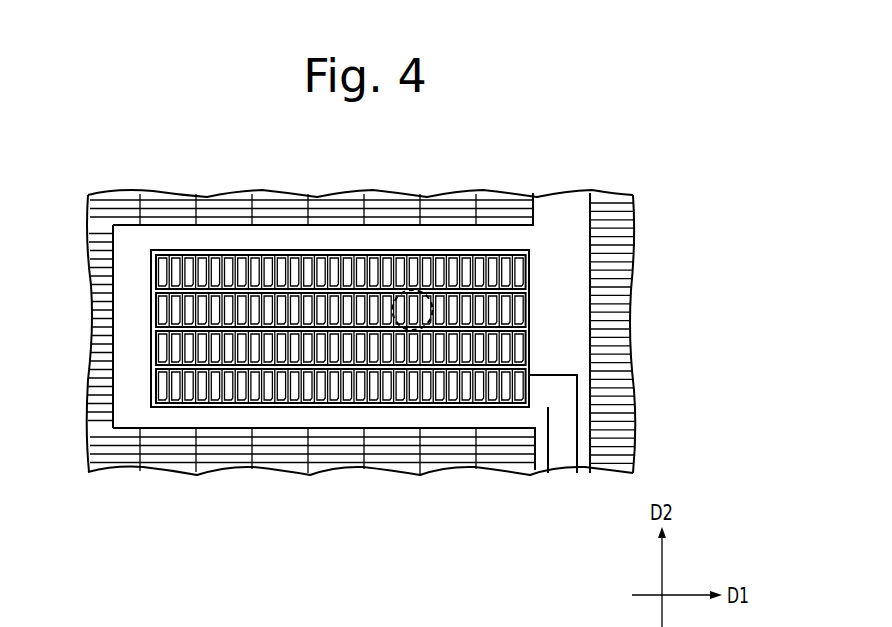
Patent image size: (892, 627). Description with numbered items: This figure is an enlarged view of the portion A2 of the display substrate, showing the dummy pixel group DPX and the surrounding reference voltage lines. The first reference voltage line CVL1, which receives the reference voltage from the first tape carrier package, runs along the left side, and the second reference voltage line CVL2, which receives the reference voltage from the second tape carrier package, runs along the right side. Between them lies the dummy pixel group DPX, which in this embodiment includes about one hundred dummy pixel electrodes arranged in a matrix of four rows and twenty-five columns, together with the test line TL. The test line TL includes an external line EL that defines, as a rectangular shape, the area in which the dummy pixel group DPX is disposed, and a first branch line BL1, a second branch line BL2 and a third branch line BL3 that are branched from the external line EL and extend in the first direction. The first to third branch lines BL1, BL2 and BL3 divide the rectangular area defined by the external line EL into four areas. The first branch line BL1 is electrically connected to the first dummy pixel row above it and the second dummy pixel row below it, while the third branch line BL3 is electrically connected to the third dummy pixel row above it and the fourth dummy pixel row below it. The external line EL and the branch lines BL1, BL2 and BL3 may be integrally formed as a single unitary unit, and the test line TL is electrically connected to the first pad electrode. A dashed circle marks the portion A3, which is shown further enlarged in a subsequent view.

The portion A2 is at (158, 191).
The dummy pixel group DPX is at (267, 243).
The external line EL is at (337, 251).
The portion A3 is at (396, 291).
The first reference voltage line CVL1 is at (93, 336).
The second reference voltage line CVL2 is at (623, 245).
The first branch line BL1 is at (523, 313).
The second branch line BL2 is at (525, 355).
The third branch line BL3 is at (525, 385).
The test line TL is at (562, 462).